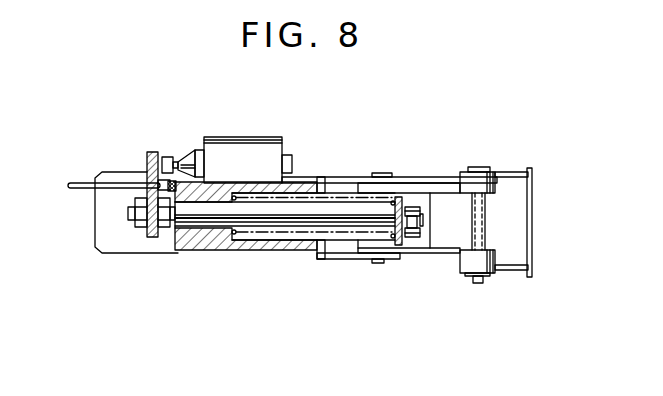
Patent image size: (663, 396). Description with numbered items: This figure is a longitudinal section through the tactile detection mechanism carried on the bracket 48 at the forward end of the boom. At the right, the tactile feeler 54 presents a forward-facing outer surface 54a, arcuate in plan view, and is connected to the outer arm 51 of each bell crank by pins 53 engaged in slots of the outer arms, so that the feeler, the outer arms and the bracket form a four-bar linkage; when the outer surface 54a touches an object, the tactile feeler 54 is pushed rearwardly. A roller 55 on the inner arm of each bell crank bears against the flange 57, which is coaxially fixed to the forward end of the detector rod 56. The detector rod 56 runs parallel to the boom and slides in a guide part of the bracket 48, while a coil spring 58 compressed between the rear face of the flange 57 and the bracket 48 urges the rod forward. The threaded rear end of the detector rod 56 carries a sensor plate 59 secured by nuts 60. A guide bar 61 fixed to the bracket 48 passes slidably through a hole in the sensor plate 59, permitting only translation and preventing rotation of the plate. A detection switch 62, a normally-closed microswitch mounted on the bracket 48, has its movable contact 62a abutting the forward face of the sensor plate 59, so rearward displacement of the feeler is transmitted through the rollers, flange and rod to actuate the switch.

The bracket 48 is at (205, 243).
The outer arm 51 is at (435, 178).
The pin 53 is at (478, 167).
The tactile feeler 54 is at (510, 172).
The outer surface 54a is at (533, 208).
The roller 55 is at (424, 220).
The detector rod 56 is at (280, 222).
The flange 57 is at (401, 197).
The coil spring 58 is at (340, 232).
The sensor plate 59 is at (147, 158).
The nuts 60 is at (160, 232).
The guide bar 61 is at (82, 188).
The detection switch 62 is at (271, 142).
The movable contact 62a is at (167, 150).